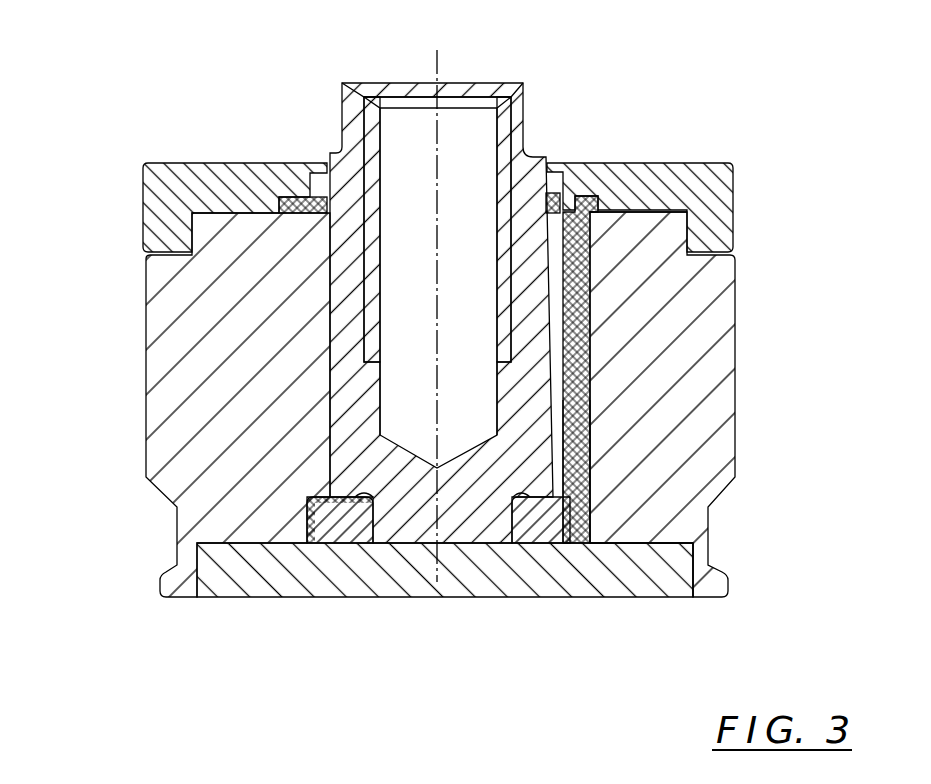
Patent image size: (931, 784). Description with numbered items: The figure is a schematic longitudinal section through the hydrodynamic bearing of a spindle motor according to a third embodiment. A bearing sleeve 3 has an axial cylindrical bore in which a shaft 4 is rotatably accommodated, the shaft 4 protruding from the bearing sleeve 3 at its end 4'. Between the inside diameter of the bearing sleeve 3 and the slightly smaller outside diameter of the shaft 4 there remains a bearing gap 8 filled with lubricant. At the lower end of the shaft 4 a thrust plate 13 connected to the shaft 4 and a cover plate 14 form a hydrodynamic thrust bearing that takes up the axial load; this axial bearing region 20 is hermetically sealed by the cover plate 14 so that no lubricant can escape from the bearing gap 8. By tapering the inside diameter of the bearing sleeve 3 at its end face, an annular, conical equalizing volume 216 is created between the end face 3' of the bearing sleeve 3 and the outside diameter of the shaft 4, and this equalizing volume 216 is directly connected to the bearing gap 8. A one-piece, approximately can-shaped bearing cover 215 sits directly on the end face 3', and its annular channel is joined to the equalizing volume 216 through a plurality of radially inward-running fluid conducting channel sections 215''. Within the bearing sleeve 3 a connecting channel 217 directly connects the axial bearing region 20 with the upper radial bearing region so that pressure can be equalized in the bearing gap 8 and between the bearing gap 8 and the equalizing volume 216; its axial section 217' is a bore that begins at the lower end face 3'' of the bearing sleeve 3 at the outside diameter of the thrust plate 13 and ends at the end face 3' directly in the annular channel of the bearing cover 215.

The bearing sleeve 3 is at (730, 404).
The end face of the bearing sleeve 3' is at (684, 111).
The lower end face of the bearing sleeve 3'' is at (641, 612).
The shaft 4 is at (441, 391).
The end of the shaft 4' is at (437, 54).
The bearing gap 8 is at (330, 370).
The thrust plate 13 is at (543, 530).
The cover plate 14 is at (257, 577).
The axial bearing region 20 is at (345, 543).
The bearing cover 215 is at (438, 131).
The fluid conducting channel sections 215'' is at (286, 112).
The equalizing volume 216 is at (555, 190).
The connecting channel 217 is at (716, 369).
The axial section of the connecting channel 217' is at (720, 471).